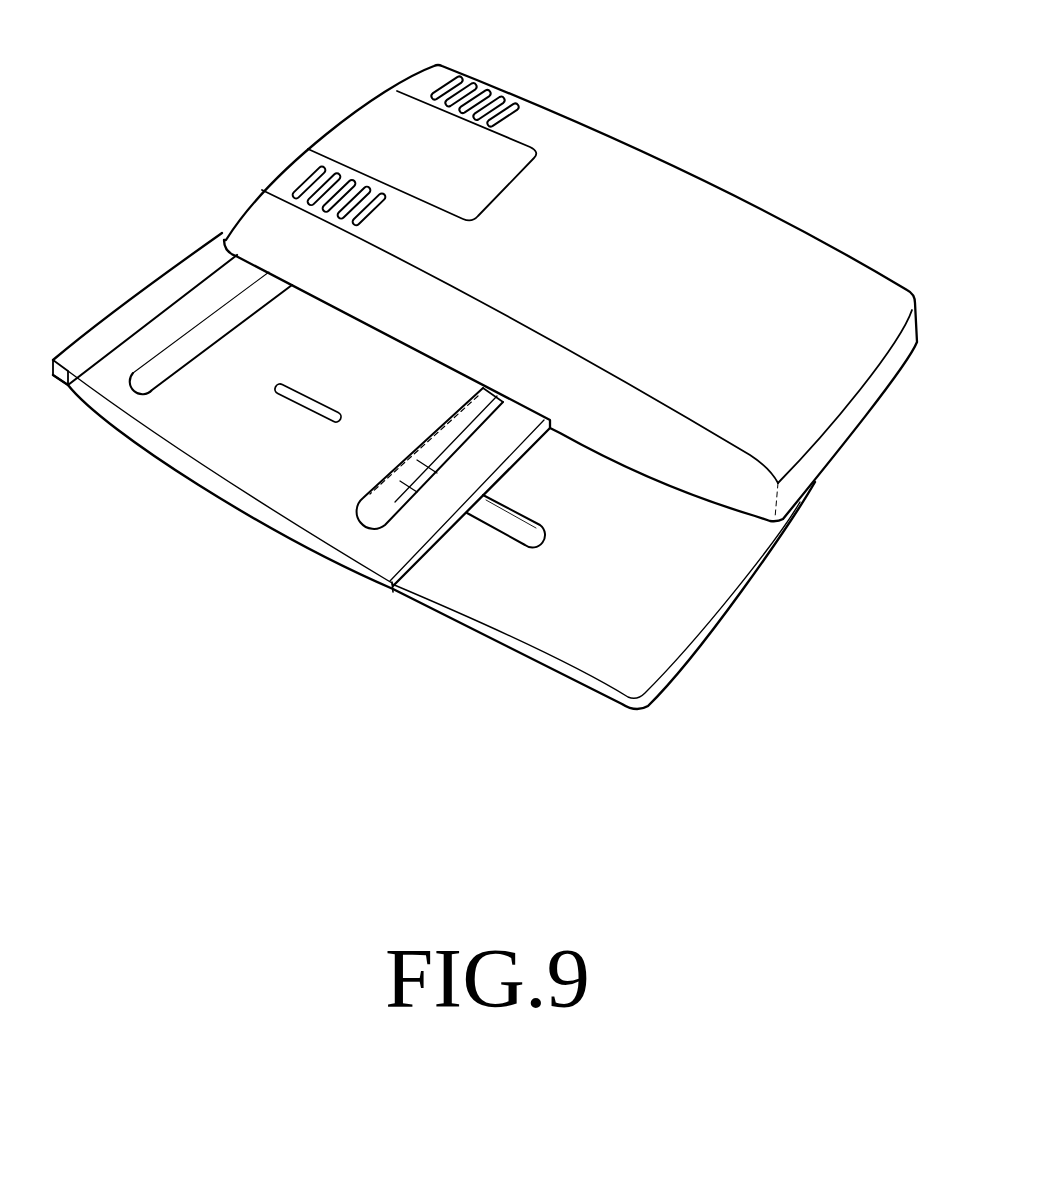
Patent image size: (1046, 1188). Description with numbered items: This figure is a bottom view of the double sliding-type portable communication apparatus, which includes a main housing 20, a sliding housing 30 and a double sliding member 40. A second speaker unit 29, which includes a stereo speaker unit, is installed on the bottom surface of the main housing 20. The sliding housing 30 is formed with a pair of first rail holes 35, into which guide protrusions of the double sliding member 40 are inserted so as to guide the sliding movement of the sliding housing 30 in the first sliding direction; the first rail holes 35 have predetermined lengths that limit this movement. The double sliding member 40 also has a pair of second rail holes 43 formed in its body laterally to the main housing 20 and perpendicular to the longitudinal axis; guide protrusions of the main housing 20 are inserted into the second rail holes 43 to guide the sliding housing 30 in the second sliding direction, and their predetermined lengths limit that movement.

The main housing 20 is at (661, 158).
The second speaker unit 29 is at (491, 88).
The sliding housing 30 is at (545, 674).
The first rail holes 35 is at (510, 531).
The double sliding member 40 is at (200, 483).
The second rail holes 43 is at (183, 356).